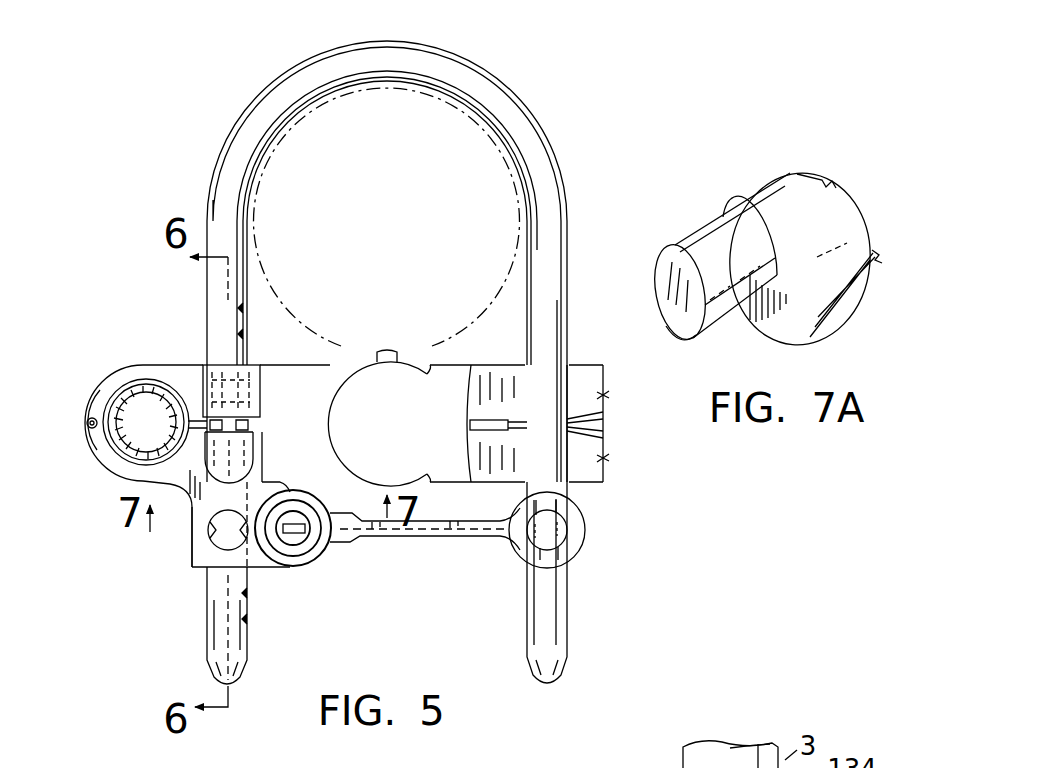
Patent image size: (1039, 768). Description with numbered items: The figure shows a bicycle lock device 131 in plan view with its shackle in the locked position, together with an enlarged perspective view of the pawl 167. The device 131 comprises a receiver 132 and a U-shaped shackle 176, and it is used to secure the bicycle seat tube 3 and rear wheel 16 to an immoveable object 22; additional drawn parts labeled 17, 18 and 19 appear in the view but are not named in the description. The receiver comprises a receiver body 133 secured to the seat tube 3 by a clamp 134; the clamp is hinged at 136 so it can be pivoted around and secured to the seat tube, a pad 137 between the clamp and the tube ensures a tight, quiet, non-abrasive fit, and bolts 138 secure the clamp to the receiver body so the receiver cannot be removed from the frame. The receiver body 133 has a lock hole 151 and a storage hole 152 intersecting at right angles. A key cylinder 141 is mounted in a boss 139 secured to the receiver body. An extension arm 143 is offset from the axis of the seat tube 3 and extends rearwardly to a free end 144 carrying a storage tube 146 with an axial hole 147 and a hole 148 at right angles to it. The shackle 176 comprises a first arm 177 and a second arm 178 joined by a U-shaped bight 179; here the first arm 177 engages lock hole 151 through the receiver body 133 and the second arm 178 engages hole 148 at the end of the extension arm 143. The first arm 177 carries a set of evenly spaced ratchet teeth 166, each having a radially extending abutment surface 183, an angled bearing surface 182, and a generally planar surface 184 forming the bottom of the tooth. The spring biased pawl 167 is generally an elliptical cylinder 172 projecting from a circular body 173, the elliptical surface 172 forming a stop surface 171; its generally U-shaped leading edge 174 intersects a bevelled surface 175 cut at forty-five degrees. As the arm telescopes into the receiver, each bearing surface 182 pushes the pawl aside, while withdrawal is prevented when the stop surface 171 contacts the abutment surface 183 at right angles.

In FIG. 5, the device 131 is at (130, 226).
In FIG. 5, the U-shaped bight 179 is at (447, 62).
In FIG. 5, the U-shaped shackle 176 is at (560, 170).
In FIG. 5, the immoveable object 22 is at (487, 137).
In FIG. 5, the first arm 177 is at (216, 291).
In FIG. 5, the second arm 178 is at (563, 273).
In FIG. 5, the angled bearing surface 182 is at (243, 306).
In FIG. 5, the generally planar surface 184 is at (240, 334).
In FIG. 5, the bicycle seat tube 3 is at (128, 380).
In FIG. 5, the clamp 134 is at (144, 364).
In FIG. 5, the pad 137 is at (110, 402).
In FIG. 5, the hinge 136 is at (85, 422).
In FIG. 5, the receiver body 133 is at (105, 468).
In FIG. 5, the receiver 132 is at (112, 483).
In FIG. 5, the bolts 138 is at (262, 379).
In FIG. 5, the cylinder housing 18 is at (453, 365).
In FIG. 5, the ball pin 17 is at (378, 352).
In FIG. 5, the rear wheel 16 is at (398, 352).
In FIG. 5, the pin 19 is at (585, 413).
In FIG. 5, the lock hole 151 is at (212, 580).
In FIG. 5, the storage hole 152 is at (218, 528).
In FIG. 5, the boss 139 is at (312, 557).
In FIG. 5, the key cylinder 141 is at (297, 533).
In FIG. 5, the extension arm 143 is at (442, 543).
In FIG. 5, the free end 144 is at (587, 538).
In FIG. 5, the hole 147 is at (542, 537).
In FIG. 5, the storage tube 146 is at (577, 553).
In FIG. 5, the hole 148 is at (580, 509).
In FIG. 5, the abutment surface 183 is at (240, 618).
In FIG. 5, the ratchet teeth 166 is at (247, 622).
In FIG. 7A, the pawl 167 is at (698, 228).
In FIG. 7A, the elliptical cylinder 172 is at (745, 253).
In FIG. 7A, the circular body 173 is at (845, 210).
In FIG. 7A, the bevelled surface 175 is at (672, 286).
In FIG. 7A, the leading edge 174 is at (676, 333).
In FIG. 7A, the stop surface 171 is at (708, 297).